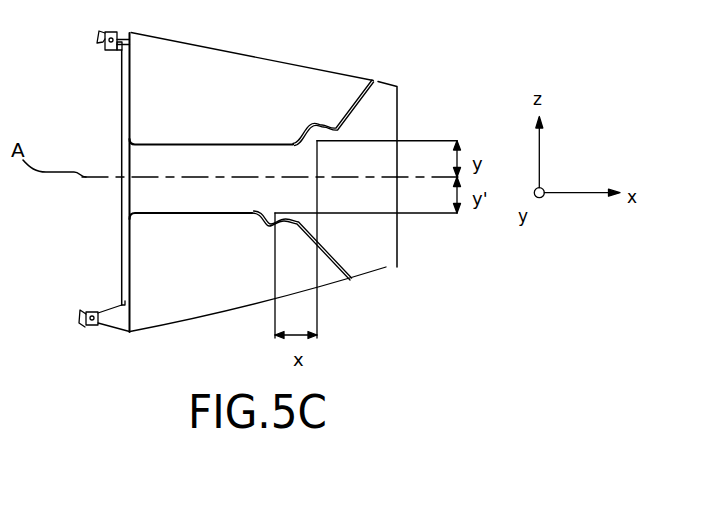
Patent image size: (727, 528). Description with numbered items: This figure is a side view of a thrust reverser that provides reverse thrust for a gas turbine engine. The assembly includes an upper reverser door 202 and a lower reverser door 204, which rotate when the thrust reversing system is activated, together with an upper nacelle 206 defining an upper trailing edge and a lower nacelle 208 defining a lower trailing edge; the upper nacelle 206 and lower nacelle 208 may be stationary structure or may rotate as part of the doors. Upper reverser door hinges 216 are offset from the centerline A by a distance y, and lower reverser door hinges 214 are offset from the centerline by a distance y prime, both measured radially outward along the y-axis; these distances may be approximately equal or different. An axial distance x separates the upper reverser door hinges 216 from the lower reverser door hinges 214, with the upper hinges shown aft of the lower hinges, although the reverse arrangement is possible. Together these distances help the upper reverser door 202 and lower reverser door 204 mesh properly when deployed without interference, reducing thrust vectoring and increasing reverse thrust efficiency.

The upper reverser door 202 is at (222, 117).
The lower reverser door 204 is at (214, 258).
The upper nacelle 206 is at (387, 91).
The lower nacelle 208 is at (386, 267).
The lower reverser door hinges 214 is at (270, 231).
The upper reverser door hinges 216 is at (316, 140).